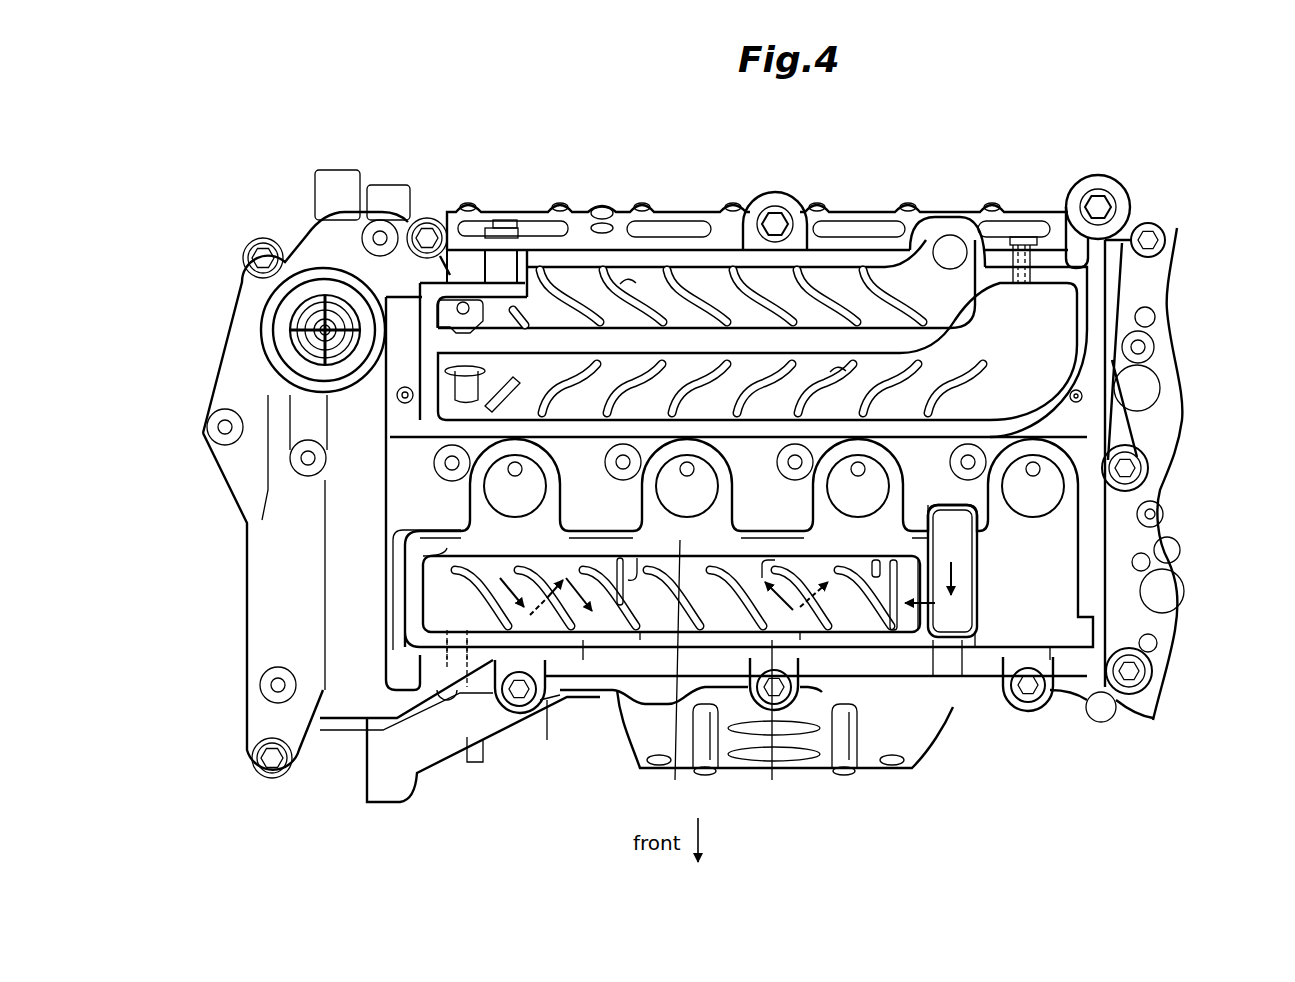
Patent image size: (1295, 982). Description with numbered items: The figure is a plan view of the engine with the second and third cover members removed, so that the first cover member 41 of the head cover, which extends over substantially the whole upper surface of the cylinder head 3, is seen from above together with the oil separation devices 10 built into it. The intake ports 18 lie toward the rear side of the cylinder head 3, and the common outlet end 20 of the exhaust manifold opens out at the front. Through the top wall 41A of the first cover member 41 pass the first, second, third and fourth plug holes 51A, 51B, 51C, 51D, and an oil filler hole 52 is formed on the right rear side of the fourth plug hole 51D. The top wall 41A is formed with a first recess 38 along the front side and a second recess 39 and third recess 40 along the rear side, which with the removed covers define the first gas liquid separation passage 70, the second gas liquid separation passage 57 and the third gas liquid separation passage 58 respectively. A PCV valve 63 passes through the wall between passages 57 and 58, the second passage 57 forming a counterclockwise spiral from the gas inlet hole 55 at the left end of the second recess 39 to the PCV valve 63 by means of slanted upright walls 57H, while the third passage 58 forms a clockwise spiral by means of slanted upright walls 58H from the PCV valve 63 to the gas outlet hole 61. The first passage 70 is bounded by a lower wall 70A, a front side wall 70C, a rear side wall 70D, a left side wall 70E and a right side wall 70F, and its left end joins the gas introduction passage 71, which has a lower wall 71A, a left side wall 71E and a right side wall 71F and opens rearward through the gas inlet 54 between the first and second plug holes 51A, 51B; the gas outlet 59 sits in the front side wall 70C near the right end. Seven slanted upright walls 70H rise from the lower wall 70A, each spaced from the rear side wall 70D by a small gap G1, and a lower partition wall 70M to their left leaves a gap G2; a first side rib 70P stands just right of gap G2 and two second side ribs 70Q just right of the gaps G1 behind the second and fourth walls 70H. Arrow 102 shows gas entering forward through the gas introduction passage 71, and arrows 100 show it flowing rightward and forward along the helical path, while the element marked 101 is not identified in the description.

The cylinder head 3 is at (1157, 285).
The oil separation device 10 is at (417, 375).
The intake port 18 is at (558, 228).
The common outlet end 20 is at (757, 723).
The first recess 38 is at (575, 667).
The second recess 39 is at (601, 212).
The third recess 40 is at (705, 353).
The first cover member 41 is at (270, 505).
The top wall 41A is at (268, 627).
The first plug hole 51A is at (1058, 506).
The second plug hole 51B is at (883, 506).
The third plug hole 51C is at (712, 506).
The fourth plug hole 51D is at (540, 506).
The oil filler hole 52 is at (292, 322).
The gas inlet 54 is at (1037, 555).
The gas inlet hole 55 is at (948, 243).
The second gas liquid separation passage 57 is at (748, 309).
The slanted upright wall 57H is at (625, 283).
The third gas liquid separation passage 58 is at (742, 399).
The slanted upright wall 58H is at (836, 368).
The gas outlet 59 is at (447, 640).
The gas outlet hole 61 is at (1020, 265).
The PCV valve 63 is at (467, 300).
The first gas liquid separation passage 70 is at (724, 610).
The lower wall 70A is at (940, 640).
The front side wall 70C is at (655, 640).
The rear side wall 70D is at (447, 547).
The left side wall 70E is at (1050, 650).
The right side wall 70F is at (410, 593).
The slanted upright wall 70H is at (818, 610).
The lower partition wall 70M is at (912, 640).
The first side rib 70P is at (892, 635).
The second side rib 70Q is at (633, 575).
The gas introduction passage 71 is at (968, 550).
The lower wall 71A is at (1000, 578).
The left side wall 71E is at (995, 508).
The right side wall 71F is at (914, 528).
The arrows 100 is at (830, 690).
The oil passage 101 is at (470, 660).
The arrow 102 is at (975, 632).
The gap G1 is at (726, 672).
The gap G2 is at (962, 640).